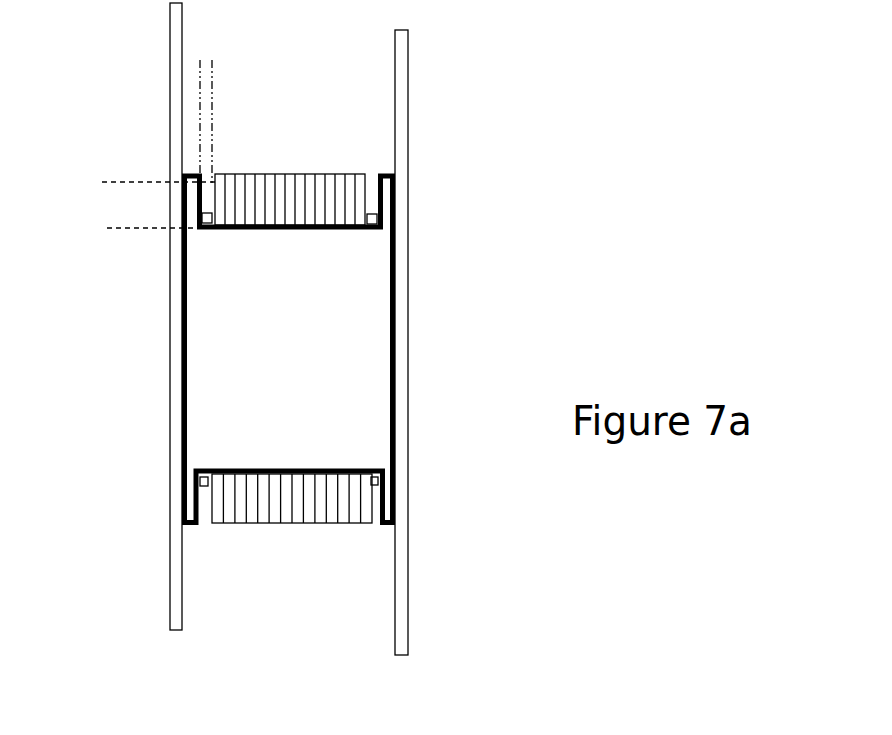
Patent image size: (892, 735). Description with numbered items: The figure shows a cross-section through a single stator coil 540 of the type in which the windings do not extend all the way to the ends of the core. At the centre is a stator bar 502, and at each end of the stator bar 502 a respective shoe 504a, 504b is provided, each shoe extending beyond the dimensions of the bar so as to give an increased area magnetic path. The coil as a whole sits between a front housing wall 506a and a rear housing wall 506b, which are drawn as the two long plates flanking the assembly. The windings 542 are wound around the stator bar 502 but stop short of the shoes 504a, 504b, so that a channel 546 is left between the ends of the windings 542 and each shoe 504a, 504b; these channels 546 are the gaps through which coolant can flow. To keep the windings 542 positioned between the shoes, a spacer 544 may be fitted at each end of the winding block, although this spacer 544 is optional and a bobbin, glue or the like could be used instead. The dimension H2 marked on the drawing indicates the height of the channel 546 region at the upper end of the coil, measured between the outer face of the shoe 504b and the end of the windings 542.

The stator bar 502 is at (308, 342).
The shoe 504a is at (192, 503).
The shoe 504b is at (387, 203).
The front housing wall 506a is at (177, 67).
The rear housing wall 506b is at (402, 70).
The stator coil 540 is at (276, 593).
The windings 542 is at (237, 172).
The spacer 544 is at (378, 219).
The channel 546 is at (208, 176).
The height dimension H2 is at (142, 205).